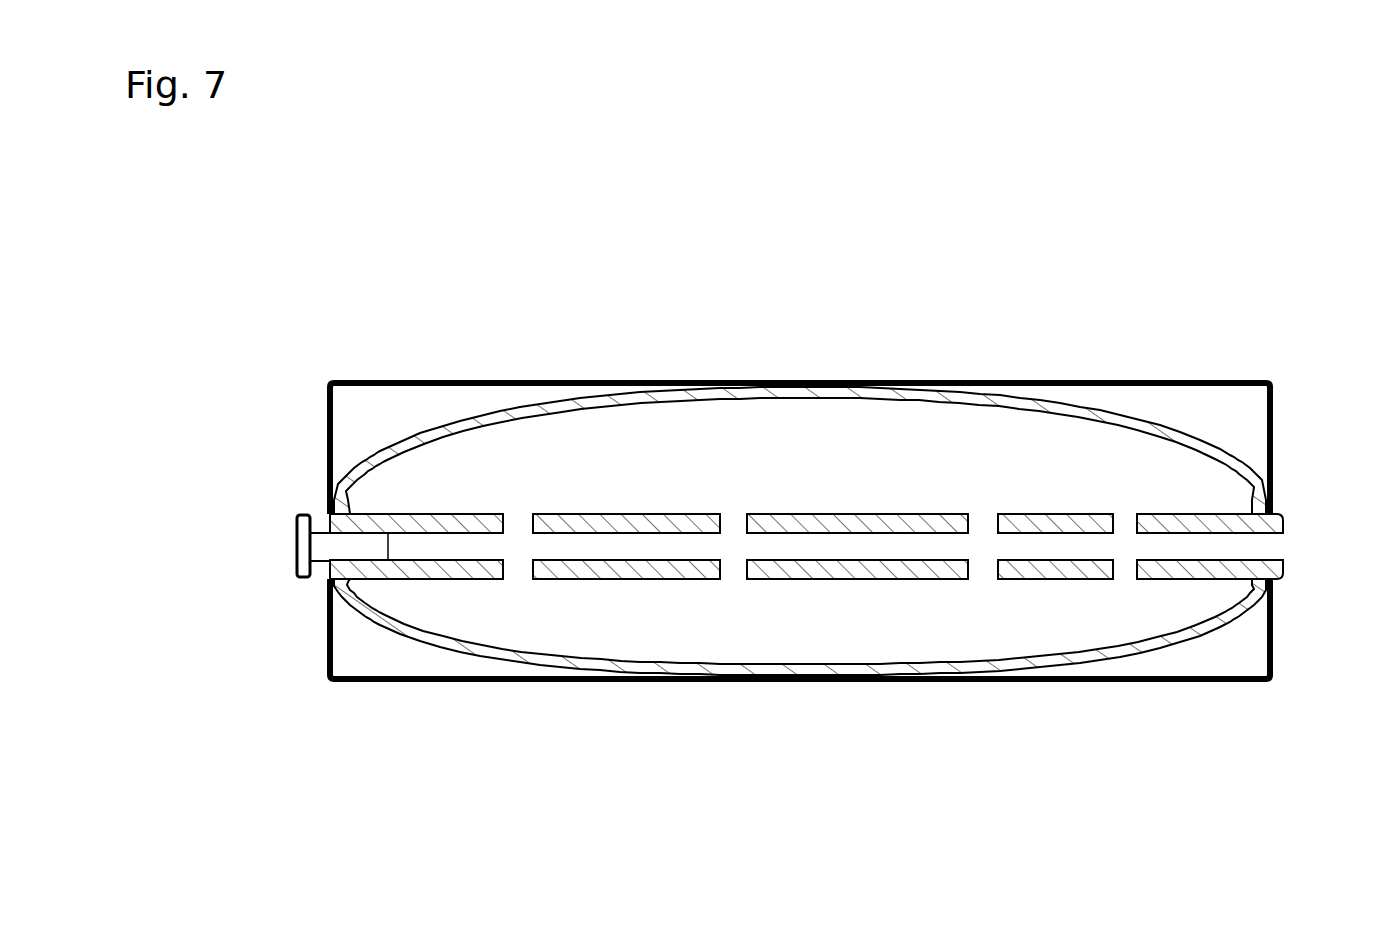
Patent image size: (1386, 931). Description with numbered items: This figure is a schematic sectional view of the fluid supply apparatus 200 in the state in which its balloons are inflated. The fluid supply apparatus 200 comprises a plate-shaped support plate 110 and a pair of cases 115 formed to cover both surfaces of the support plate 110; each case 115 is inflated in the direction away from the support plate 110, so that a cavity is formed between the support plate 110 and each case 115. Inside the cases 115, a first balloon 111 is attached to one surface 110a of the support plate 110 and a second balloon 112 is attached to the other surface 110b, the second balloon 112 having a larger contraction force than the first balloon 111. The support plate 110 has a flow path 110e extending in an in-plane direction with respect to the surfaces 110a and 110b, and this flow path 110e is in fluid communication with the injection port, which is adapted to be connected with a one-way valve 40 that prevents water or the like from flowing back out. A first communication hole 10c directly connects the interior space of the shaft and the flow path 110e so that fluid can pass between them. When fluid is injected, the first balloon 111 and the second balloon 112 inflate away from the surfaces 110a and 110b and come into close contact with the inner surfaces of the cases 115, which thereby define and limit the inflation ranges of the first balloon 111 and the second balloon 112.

The fluid supply apparatus 200 is at (1203, 291).
The case 115 is at (378, 383).
The support plate 110 is at (1177, 513).
The first balloon 111 is at (1057, 405).
The second balloon 112 is at (755, 672).
The one surface of the support plate 110a is at (858, 512).
The other surface of the support plate 110b is at (793, 580).
The flow path 110e is at (443, 533).
The one-way valve 40 is at (320, 553).
The first communication hole 10c is at (518, 513).